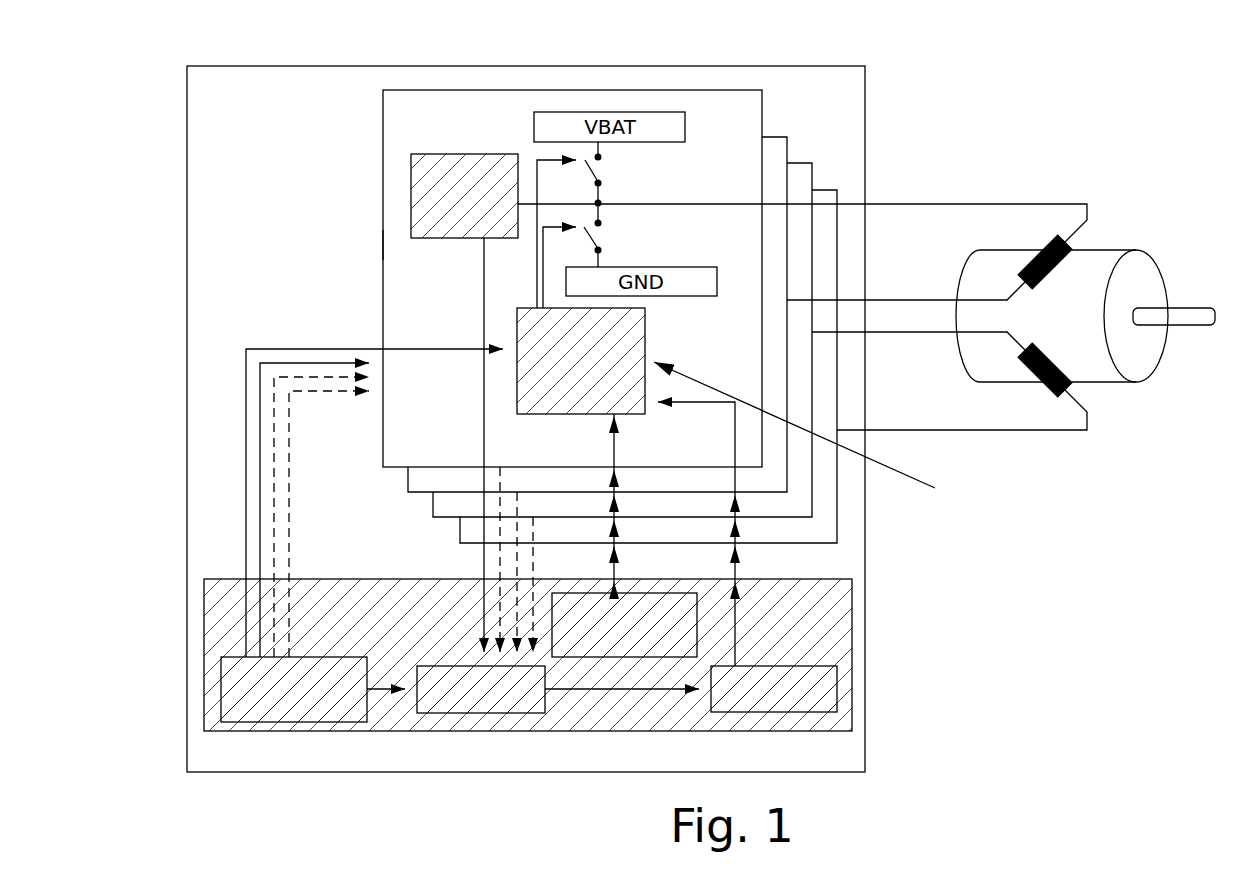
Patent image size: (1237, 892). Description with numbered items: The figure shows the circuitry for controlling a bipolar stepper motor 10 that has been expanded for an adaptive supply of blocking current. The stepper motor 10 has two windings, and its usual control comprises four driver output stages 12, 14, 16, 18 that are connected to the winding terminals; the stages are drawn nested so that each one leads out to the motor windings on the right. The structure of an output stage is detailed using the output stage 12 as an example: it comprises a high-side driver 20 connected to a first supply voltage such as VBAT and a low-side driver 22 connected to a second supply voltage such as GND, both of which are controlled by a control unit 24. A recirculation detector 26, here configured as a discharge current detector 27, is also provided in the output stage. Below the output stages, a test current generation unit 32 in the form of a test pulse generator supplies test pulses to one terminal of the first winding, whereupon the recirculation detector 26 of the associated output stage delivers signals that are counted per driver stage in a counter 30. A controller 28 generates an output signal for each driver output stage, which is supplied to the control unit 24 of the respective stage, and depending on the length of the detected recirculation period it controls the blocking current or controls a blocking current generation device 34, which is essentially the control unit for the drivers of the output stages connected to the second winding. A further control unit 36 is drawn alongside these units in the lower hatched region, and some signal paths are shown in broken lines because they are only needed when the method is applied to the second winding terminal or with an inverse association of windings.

The bipolar stepper motor 10 is at (1102, 186).
The driver output stage 12 is at (708, 168).
The driver output stage 14 is at (773, 160).
The driver output stage 16 is at (802, 178).
The driver output stage 18 is at (828, 198).
The high-side driver 20 is at (600, 172).
The low-side driver 22 is at (590, 228).
The control unit 24 is at (608, 332).
The recirculation detector 26 is at (433, 193).
The discharge current detector 27 is at (384, 245).
The controller 28 is at (803, 695).
The counter 30 is at (507, 703).
The test current generation unit 32 is at (285, 703).
The blocking current generation device 34 is at (814, 439).
The control unit 36 is at (665, 622).